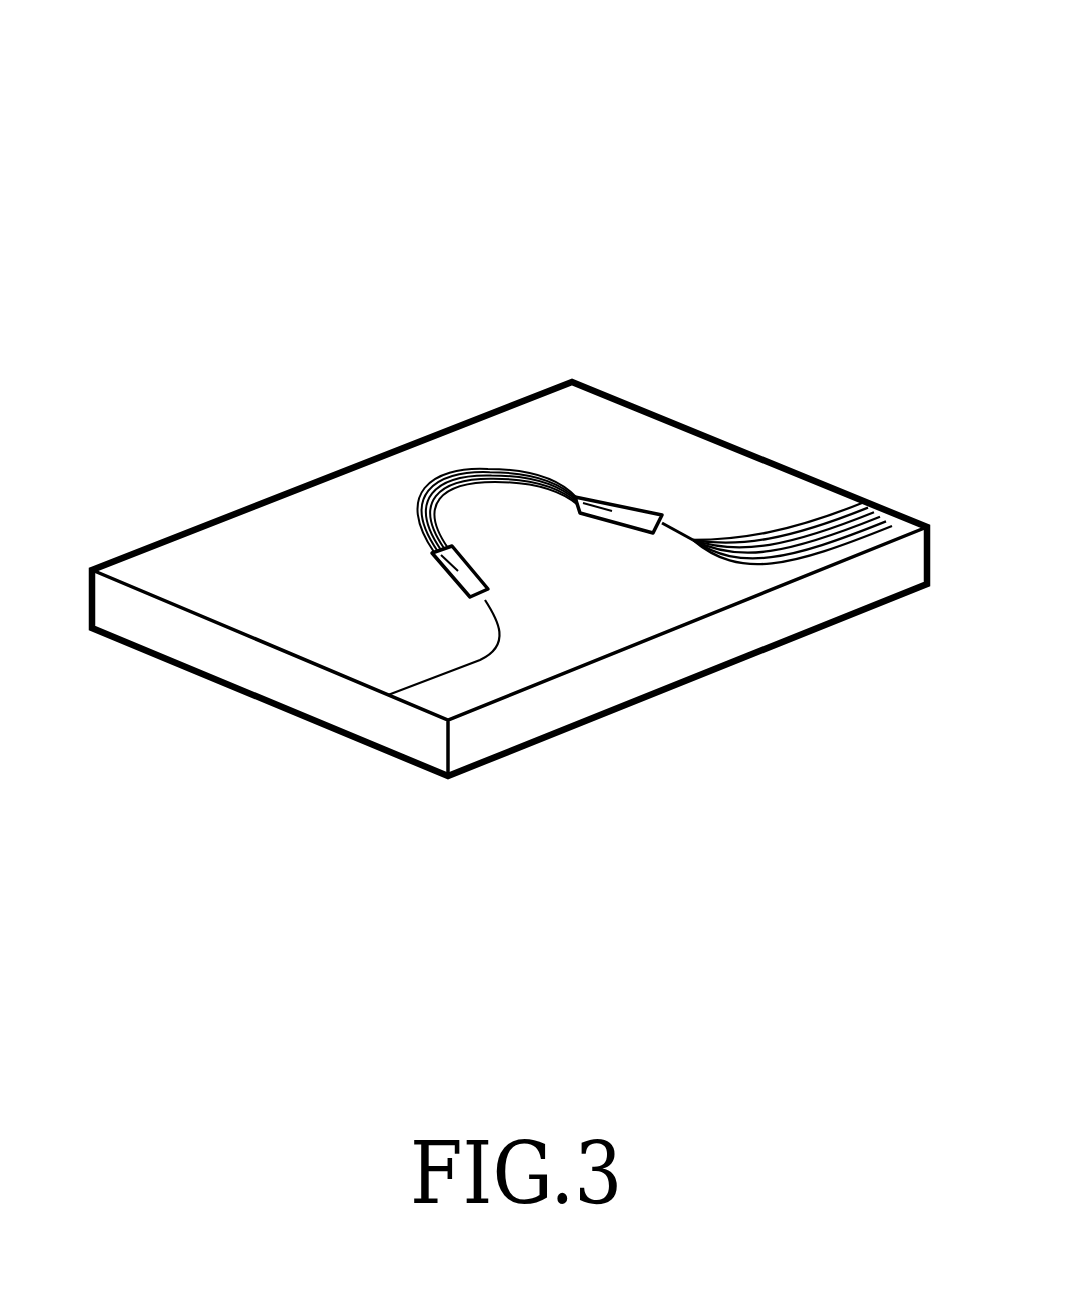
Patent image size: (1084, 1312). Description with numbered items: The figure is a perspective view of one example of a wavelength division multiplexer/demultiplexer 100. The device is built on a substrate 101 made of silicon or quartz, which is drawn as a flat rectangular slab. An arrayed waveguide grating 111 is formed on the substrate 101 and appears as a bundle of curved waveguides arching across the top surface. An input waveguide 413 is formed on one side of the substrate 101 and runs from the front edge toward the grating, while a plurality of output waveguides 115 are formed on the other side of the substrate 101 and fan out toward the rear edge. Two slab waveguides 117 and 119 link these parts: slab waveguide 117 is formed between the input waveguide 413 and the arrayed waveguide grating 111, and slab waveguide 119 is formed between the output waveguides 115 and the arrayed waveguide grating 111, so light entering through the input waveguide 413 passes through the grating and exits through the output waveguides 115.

The wavelength division multiplexer/demultiplexer 100 is at (482, 47).
The substrate 101 is at (682, 665).
The arrayed waveguide grating 111 is at (443, 487).
The output waveguides 115 is at (790, 527).
The slab waveguide 117 is at (430, 547).
The slab waveguide 119 is at (623, 507).
The input waveguide 413 is at (452, 668).